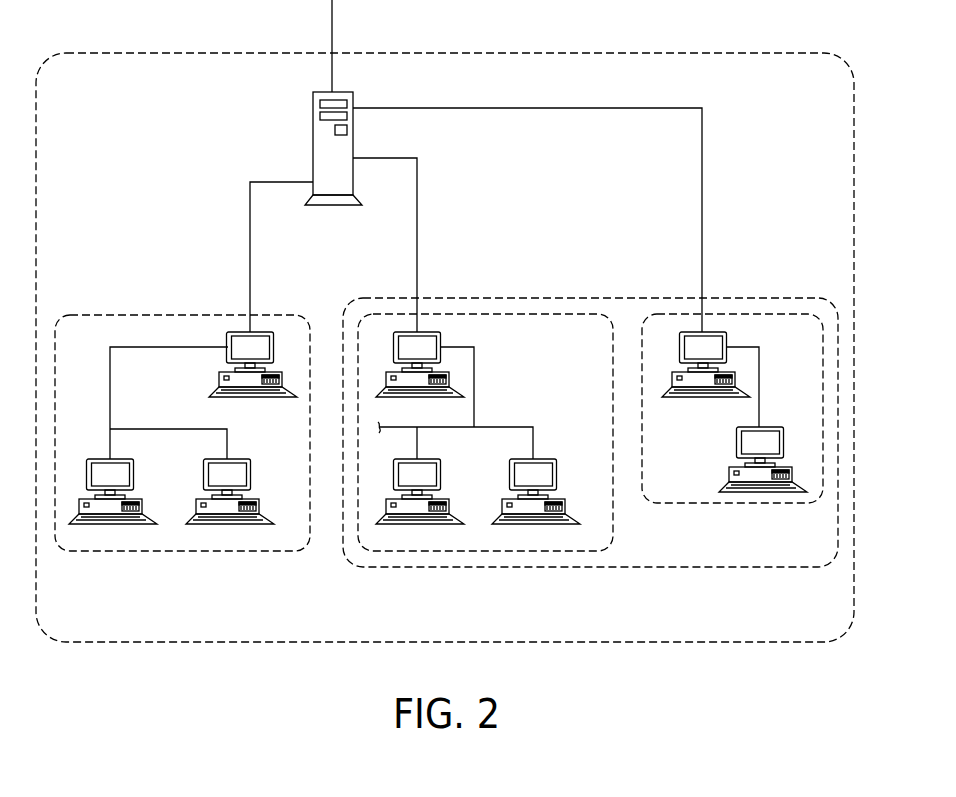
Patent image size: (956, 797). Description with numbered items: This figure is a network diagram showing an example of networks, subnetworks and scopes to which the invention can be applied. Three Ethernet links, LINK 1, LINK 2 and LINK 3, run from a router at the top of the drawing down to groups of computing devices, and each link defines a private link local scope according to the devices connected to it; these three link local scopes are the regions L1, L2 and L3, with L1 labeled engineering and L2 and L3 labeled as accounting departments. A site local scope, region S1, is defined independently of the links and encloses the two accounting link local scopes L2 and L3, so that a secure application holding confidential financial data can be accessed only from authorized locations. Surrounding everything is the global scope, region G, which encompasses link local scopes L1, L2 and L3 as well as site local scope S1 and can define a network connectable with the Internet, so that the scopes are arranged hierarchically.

The global scope G is at (517, 53).
The site local scope S1 is at (630, 567).
The link local scope L1 is at (146, 314).
The link local scope L2 is at (523, 314).
The link local scope L3 is at (782, 314).
The Ethernet link LINK 1 is at (280, 244).
The Ethernet link LINK 2 is at (527, 208).
The Ethernet link LINK 3 is at (385, 233).